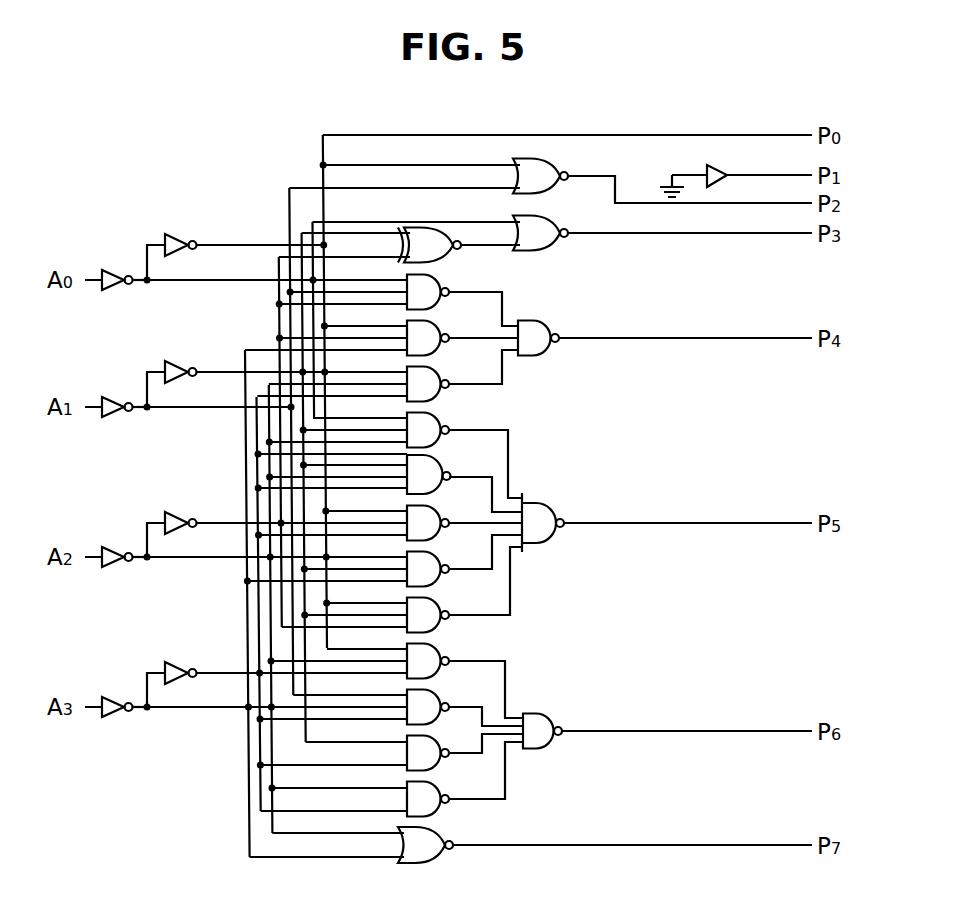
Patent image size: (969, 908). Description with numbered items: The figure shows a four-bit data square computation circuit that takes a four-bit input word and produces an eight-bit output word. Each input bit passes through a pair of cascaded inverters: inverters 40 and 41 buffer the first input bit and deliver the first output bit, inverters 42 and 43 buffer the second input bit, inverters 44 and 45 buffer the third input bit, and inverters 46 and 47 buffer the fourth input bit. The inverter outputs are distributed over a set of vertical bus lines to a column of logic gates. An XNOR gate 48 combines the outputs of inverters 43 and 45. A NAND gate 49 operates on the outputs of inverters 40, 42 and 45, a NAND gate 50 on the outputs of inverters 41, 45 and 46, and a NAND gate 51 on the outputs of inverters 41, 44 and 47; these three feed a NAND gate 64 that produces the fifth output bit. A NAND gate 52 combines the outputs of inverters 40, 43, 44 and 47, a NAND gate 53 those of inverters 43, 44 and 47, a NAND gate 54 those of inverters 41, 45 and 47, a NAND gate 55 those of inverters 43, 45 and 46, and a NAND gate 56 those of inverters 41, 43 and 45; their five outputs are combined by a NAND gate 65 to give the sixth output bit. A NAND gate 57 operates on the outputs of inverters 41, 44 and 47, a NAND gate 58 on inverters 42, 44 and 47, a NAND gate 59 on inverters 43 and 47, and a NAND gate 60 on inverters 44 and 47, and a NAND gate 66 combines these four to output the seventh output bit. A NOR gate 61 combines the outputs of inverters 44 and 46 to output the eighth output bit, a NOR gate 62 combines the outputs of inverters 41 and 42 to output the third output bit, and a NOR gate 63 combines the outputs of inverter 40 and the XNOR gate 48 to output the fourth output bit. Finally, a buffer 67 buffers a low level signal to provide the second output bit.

The inverter 40 is at (110, 291).
The inverter 41 is at (186, 234).
The inverter 42 is at (111, 417).
The inverter 43 is at (186, 361).
The inverter 44 is at (111, 567).
The inverter 45 is at (186, 511).
The inverter 46 is at (112, 717).
The inverter 47 is at (186, 661).
The XNOR gate 48 is at (447, 260).
The NAND gate 49 is at (438, 306).
The NAND gate 50 is at (438, 352).
The NAND gate 51 is at (438, 398).
The NAND gate 52 is at (438, 445).
The NAND gate 53 is at (434, 494).
The NAND gate 54 is at (434, 539).
The NAND gate 55 is at (438, 585).
The NAND gate 56 is at (434, 631).
The NAND gate 57 is at (434, 677).
The NAND gate 58 is at (433, 723).
The NAND gate 59 is at (434, 769).
The NAND gate 60 is at (434, 815).
The NOR gate 61 is at (425, 862).
The NOR gate 62 is at (547, 192).
The NOR gate 63 is at (547, 250).
The NAND gate 64 is at (543, 354).
The NAND gate 65 is at (543, 542).
The NAND gate 66 is at (547, 747).
The buffer 67 is at (722, 165).